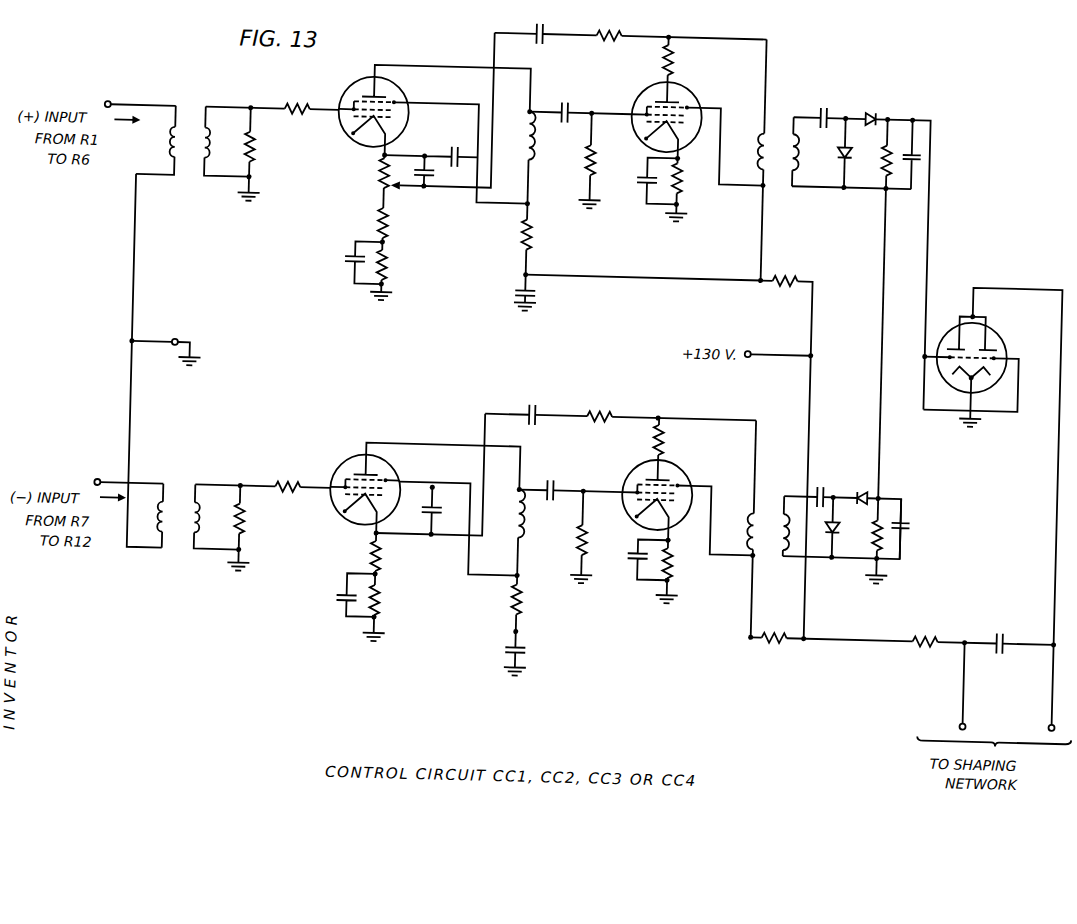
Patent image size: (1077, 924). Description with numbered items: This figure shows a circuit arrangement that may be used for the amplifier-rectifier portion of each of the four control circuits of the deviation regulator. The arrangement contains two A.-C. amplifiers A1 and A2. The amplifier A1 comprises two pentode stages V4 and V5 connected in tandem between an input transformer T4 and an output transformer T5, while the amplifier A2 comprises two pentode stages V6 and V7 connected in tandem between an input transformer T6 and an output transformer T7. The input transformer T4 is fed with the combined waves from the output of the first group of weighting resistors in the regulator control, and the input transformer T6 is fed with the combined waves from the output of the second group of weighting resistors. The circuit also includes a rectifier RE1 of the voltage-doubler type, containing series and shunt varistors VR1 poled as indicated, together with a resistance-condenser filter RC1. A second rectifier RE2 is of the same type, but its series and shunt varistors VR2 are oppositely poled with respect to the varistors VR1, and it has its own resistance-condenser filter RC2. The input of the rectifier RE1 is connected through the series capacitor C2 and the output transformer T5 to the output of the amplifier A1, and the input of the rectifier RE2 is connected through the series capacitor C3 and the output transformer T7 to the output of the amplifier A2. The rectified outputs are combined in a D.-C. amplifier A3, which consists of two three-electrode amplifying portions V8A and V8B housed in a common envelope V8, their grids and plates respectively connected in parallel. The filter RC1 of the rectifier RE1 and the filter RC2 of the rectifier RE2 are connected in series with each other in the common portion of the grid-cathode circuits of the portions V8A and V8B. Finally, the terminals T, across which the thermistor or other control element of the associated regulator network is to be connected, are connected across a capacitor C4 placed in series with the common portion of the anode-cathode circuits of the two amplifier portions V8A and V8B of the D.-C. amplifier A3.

The input transformer T4 is at (179, 117).
The A.-C. amplifier A1 is at (523, 181).
The pentode stage V4 is at (391, 98).
The pentode stage V5 is at (686, 89).
The output transformer T5 is at (769, 121).
The rectifier RE1 is at (847, 245).
The series capacitor C2 is at (817, 103).
The varistors VR1 is at (857, 135).
The resistance-condenser filter RC1 is at (893, 158).
The D.-C. amplifier A3 is at (974, 465).
The common envelope V8 is at (986, 356).
The three-electrode amplifying portion V8A is at (947, 335).
The three-electrode amplifying portion V8B is at (989, 334).
The input transformer T6 is at (179, 501).
The A.-C. amplifier A2 is at (513, 552).
The pentode stage V6 is at (398, 477).
The pentode stage V7 is at (690, 476).
The output transformer T7 is at (771, 504).
The second rectifier RE2 is at (870, 534).
The series capacitor C3 is at (819, 483).
The varistors VR2 is at (859, 526).
The second resistance-condenser filter RC2 is at (891, 512).
The capacitor C4 is at (1007, 623).
The terminals T is at (1052, 712).